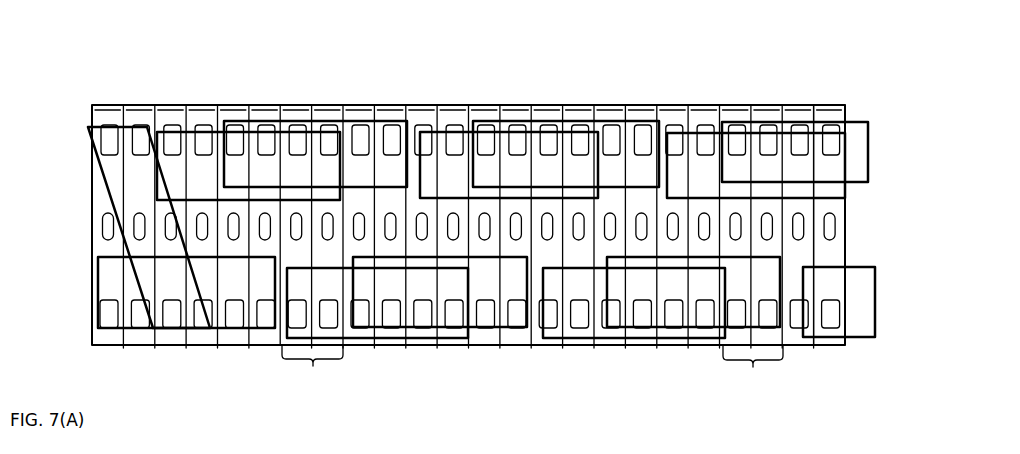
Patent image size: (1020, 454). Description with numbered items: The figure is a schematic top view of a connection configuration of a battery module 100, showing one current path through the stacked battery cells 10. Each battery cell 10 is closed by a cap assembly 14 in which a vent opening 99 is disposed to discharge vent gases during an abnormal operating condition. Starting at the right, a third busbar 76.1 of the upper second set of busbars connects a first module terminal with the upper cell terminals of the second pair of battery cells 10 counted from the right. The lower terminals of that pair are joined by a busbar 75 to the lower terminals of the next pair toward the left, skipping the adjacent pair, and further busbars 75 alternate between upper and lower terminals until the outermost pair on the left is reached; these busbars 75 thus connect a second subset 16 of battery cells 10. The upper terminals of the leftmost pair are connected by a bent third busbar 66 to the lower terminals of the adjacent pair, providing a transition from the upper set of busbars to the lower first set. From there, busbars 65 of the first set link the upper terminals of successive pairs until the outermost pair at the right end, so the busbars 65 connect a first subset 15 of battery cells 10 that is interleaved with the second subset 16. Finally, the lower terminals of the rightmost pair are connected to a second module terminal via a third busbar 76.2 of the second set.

The battery module 100 is at (120, 92).
The battery cell 10 is at (360, 105).
The cap assembly 14 is at (836, 210).
The vent opening 99 is at (833, 228).
The third busbar 66 is at (95, 180).
The busbar 75 is at (278, 125).
The busbar 65 is at (189, 130).
The third busbar 76.1 is at (765, 128).
The third busbar 76.2 is at (828, 338).
The first subset 15 is at (312, 372).
The second subset 16 is at (753, 373).